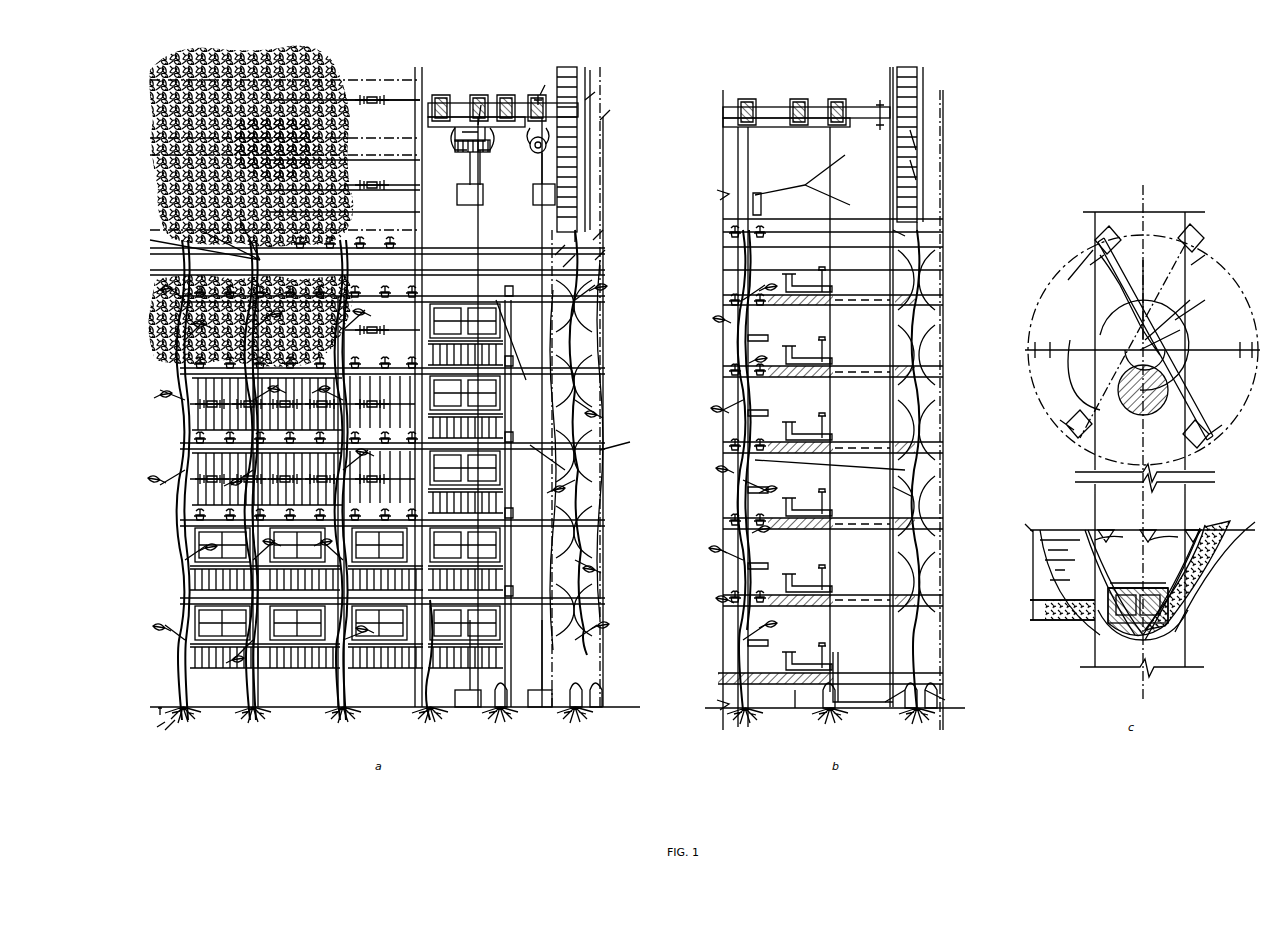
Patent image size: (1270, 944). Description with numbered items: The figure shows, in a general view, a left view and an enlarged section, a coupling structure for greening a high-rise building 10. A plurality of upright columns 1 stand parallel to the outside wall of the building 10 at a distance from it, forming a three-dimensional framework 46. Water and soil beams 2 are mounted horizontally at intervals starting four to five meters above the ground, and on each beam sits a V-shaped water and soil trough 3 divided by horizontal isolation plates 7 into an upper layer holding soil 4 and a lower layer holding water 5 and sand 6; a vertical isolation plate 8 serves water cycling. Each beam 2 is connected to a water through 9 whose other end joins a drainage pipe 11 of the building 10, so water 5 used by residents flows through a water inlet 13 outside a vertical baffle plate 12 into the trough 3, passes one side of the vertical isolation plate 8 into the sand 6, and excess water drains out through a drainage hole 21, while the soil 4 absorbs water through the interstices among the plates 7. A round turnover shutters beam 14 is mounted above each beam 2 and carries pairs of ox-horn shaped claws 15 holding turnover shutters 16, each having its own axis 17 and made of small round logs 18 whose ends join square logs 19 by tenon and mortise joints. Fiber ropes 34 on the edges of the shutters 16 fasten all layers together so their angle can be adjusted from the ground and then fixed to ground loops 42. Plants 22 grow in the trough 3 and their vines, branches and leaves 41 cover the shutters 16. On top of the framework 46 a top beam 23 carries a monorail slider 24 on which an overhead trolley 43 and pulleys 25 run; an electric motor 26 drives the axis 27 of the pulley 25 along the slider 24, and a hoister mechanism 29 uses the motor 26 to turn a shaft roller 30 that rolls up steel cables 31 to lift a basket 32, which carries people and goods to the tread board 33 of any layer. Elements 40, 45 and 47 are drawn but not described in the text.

The upright column 1 is at (201, 45).
The water and soil beam 2 is at (382, 97).
The water and soil trough 3 is at (1246, 479).
The soil 4 is at (179, 622).
The water 5 is at (724, 211).
The sand 6 is at (910, 594).
The horizontal isolation plate 7 is at (906, 310).
The vertical isolation plate 8 is at (590, 232).
The water through 9 is at (515, 256).
The high-rise building 10 is at (506, 276).
The drainage pipe 11 is at (489, 282).
The vertical baffle plate 12 is at (400, 99).
The water inlet 13 is at (1114, 594).
The turnover shutters beam 14 is at (385, 185).
The ox-horn shaped claw 15 is at (180, 523).
The turnover shutter 16 is at (314, 45).
The axis 17 is at (386, 182).
The small round log 18 is at (1176, 268).
The square log 19 is at (1198, 427).
The drainage hole 21 is at (1160, 588).
The plant 22 is at (570, 50).
The top beam 23 is at (510, 94).
The monorail slider 24 is at (456, 115).
The pulley 25 is at (456, 127).
The electric motor 26 is at (455, 133).
The axis 27 is at (536, 117).
The hoister mechanism 29 is at (482, 150).
The shaft roller 30 is at (480, 150).
The steel cable 31 is at (470, 171).
The basket 32 is at (176, 115).
The tread board 33 is at (592, 250).
The fiber rope 34 is at (538, 94).
The latch 40 is at (588, 162).
The vines, branches and leaves 41 is at (588, 470).
The ground loop 42 is at (942, 694).
The overhead trolley 43 is at (479, 105).
The support 45 is at (254, 278).
The three-dimensional framework 46 is at (510, 386).
The stub 47 is at (759, 196).